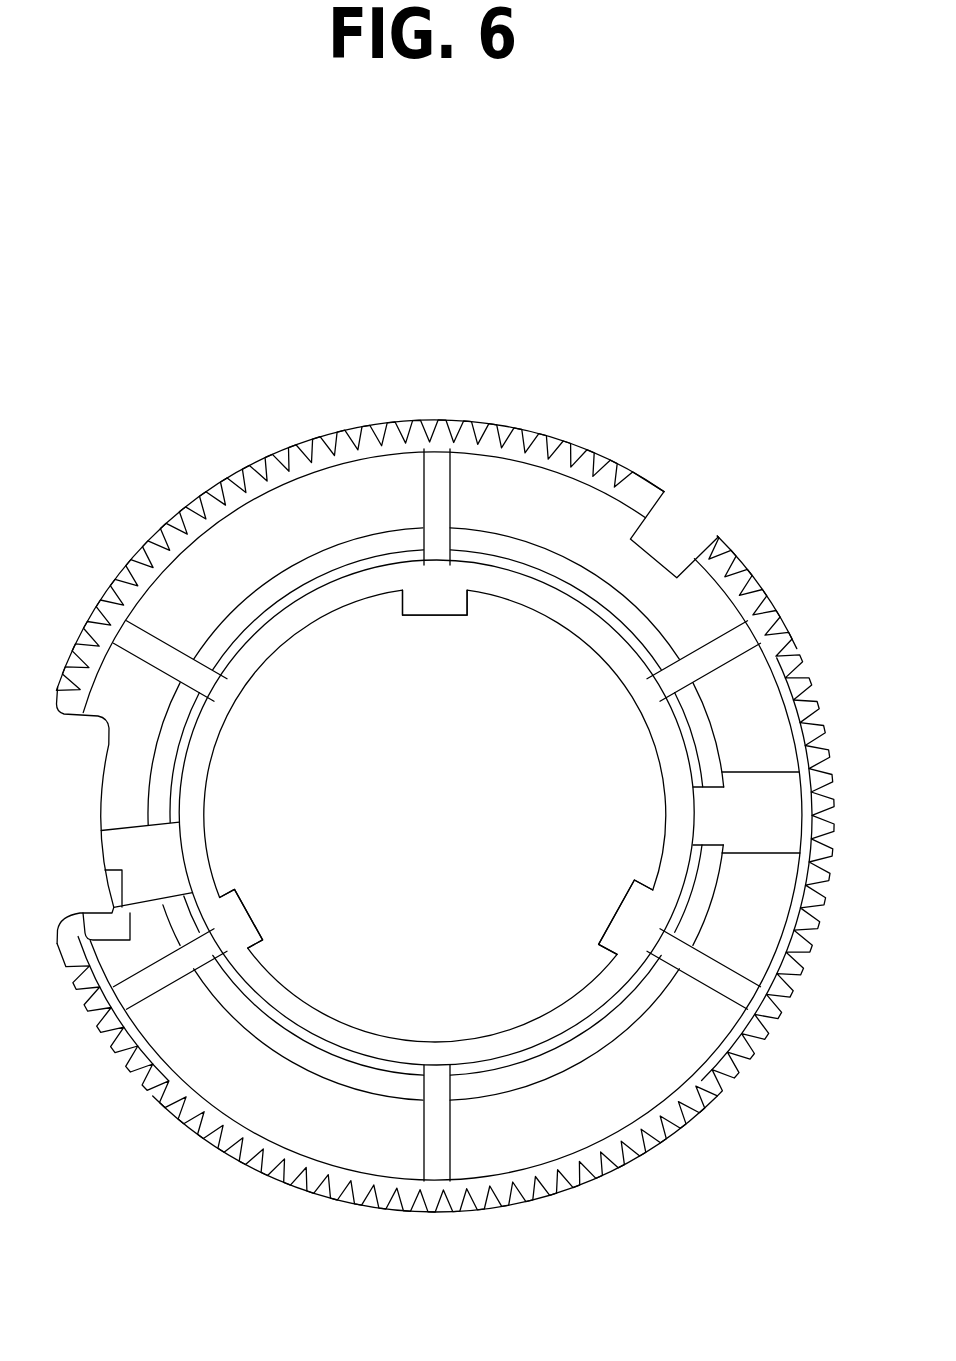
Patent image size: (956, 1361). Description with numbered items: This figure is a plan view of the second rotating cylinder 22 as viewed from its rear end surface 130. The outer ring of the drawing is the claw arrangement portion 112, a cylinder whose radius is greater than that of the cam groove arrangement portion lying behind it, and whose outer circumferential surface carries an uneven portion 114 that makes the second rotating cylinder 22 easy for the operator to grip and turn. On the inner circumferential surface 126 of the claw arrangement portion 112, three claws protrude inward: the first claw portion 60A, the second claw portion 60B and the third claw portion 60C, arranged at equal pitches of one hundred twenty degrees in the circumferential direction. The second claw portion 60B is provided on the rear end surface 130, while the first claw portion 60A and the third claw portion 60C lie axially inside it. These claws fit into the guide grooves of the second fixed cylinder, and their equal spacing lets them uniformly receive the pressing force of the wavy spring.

The second rotating cylinder 22 is at (595, 337).
The claw arrangement portion 112 is at (302, 1130).
The uneven portion 114 is at (538, 1200).
The inner circumferential surface 126 is at (280, 677).
The rear end surface 130 is at (640, 692).
The first claw portion 60A is at (620, 917).
The second claw portion 60B is at (433, 606).
The third claw portion 60C is at (247, 923).